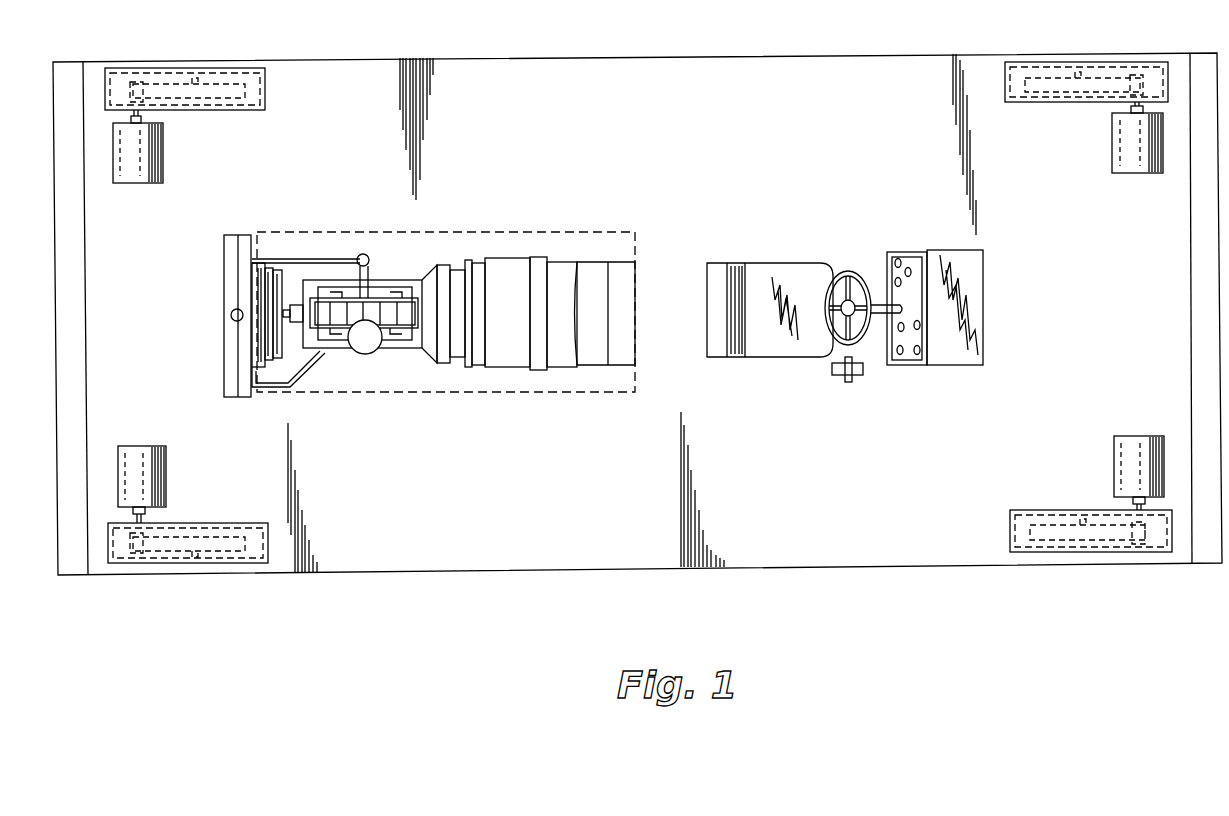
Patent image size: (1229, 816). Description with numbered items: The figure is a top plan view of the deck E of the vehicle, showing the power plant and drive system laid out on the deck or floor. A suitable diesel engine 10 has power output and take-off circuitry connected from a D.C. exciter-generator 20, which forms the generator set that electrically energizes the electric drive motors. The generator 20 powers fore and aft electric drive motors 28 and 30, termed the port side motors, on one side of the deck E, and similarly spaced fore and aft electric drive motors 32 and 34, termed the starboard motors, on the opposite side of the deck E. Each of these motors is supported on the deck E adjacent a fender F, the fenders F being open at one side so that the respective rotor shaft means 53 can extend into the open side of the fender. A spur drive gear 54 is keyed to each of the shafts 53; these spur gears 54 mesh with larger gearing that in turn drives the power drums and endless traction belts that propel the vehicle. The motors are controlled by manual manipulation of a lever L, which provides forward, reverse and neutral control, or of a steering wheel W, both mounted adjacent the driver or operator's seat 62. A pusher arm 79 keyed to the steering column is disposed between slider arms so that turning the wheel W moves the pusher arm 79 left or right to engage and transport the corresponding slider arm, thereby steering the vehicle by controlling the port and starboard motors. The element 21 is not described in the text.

The diesel engine 10 is at (488, 222).
The D.C. exciter-generator 20 is at (507, 355).
The barrel end section 21 is at (597, 360).
The electric drive motor 28 is at (1136, 452).
The electric drive motor 30 is at (138, 465).
The electric drive motor 32 is at (1143, 163).
The electric drive motor 34 is at (142, 170).
The rotor shaft means 53 is at (146, 119).
The spur drive gear 54 is at (1128, 84).
The operator's seat 62 is at (772, 358).
The pusher arm 79 is at (908, 258).
The fenders F is at (212, 75).
The steering wheel W is at (852, 271).
The lever L is at (848, 384).
The deck E is at (648, 486).